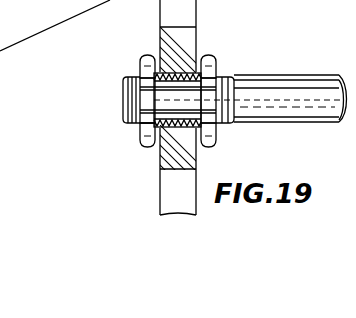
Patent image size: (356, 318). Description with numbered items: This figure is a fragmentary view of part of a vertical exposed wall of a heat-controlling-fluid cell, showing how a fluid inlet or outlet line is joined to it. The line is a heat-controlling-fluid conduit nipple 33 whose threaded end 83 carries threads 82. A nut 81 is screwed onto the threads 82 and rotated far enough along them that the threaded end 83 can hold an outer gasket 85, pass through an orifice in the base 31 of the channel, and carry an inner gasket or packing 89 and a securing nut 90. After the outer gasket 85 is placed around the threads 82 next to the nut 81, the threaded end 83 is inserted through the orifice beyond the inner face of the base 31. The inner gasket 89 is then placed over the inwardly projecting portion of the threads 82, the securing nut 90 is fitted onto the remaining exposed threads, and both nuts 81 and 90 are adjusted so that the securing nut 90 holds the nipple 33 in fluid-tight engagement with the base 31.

The base 31 is at (186, 211).
The heat-controlling-fluid conduit nipple 33 is at (327, 55).
The nut 81 is at (208, 58).
The threads 82 is at (226, 76).
The threaded end 83 is at (124, 94).
The outer gasket 85 is at (197, 143).
The inner gasket or packing 89 is at (158, 144).
The securing nut 90 is at (140, 135).